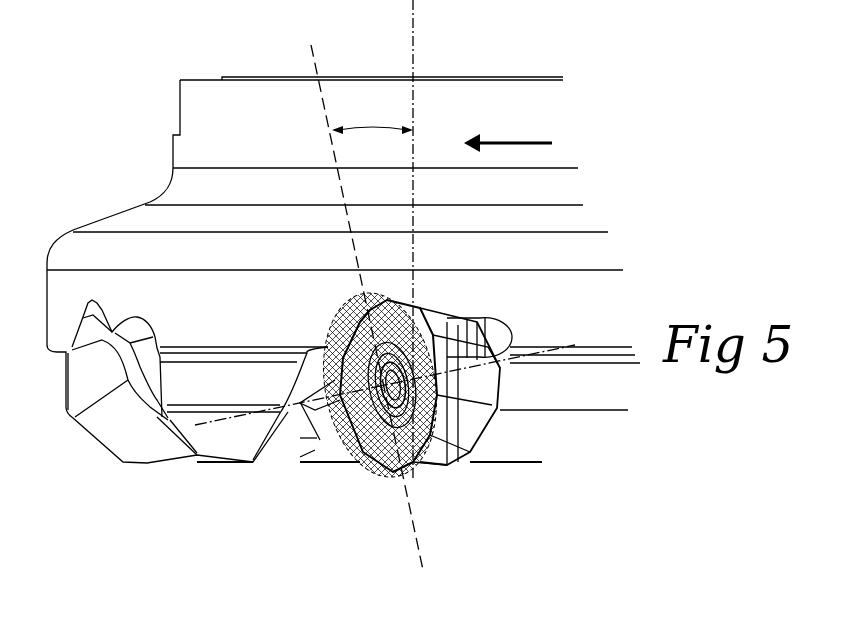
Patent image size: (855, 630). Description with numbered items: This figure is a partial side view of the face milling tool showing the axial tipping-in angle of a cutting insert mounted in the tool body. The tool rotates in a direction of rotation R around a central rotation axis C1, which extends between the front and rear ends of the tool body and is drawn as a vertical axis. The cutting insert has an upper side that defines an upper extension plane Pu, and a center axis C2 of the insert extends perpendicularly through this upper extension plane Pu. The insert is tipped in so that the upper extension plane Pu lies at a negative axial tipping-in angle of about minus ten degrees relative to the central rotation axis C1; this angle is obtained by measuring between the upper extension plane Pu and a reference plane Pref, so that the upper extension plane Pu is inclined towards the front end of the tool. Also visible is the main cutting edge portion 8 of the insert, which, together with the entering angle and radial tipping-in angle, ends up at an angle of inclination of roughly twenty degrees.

The main cutting edge portion 8 is at (442, 460).
The central rotation axis C1 is at (413, 10).
The center axis C2 is at (217, 428).
The reference plane Pref is at (413, 197).
The upper extension plane Pu is at (387, 476).
The direction of rotation R is at (508, 134).